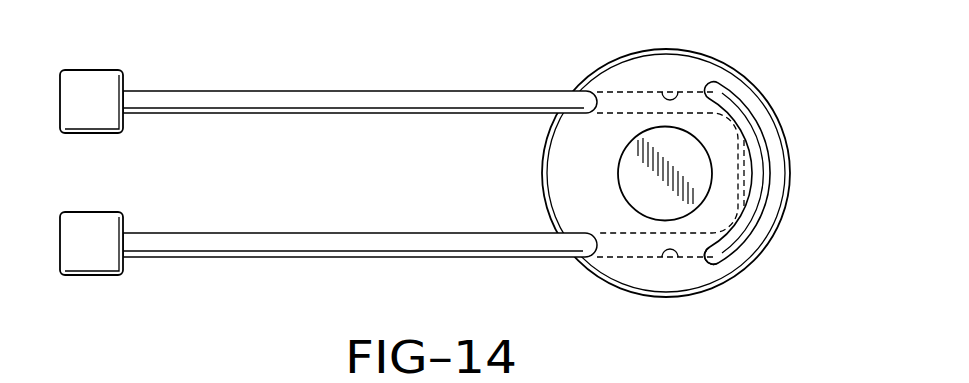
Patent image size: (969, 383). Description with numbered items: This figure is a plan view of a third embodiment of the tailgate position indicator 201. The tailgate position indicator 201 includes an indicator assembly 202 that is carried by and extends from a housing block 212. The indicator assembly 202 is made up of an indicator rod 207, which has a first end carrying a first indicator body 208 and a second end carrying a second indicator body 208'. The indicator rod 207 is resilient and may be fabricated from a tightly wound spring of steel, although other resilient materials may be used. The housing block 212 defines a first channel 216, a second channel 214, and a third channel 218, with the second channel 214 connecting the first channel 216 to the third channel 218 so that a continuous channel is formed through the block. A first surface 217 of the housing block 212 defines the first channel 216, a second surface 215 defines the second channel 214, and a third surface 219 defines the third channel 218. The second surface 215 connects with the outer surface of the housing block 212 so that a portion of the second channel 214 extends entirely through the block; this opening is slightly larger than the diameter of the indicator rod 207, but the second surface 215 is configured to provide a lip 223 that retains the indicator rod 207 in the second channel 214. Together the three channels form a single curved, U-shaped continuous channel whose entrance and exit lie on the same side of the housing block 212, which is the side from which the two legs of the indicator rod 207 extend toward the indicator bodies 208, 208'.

The tailgate position indicator 201 is at (730, 38).
The indicator assembly 202 is at (324, 80).
The indicator rod 207 is at (207, 98).
The first indicator body 208 is at (126, 75).
The second indicator body 208' is at (129, 219).
The housing block 212 is at (545, 163).
The second channel 214 is at (730, 280).
The second surface 215 is at (737, 255).
The first channel 216 is at (621, 272).
The first surface 217 is at (684, 260).
The third channel 218 is at (620, 78).
The third surface 219 is at (684, 90).
The lip 223 is at (770, 176).